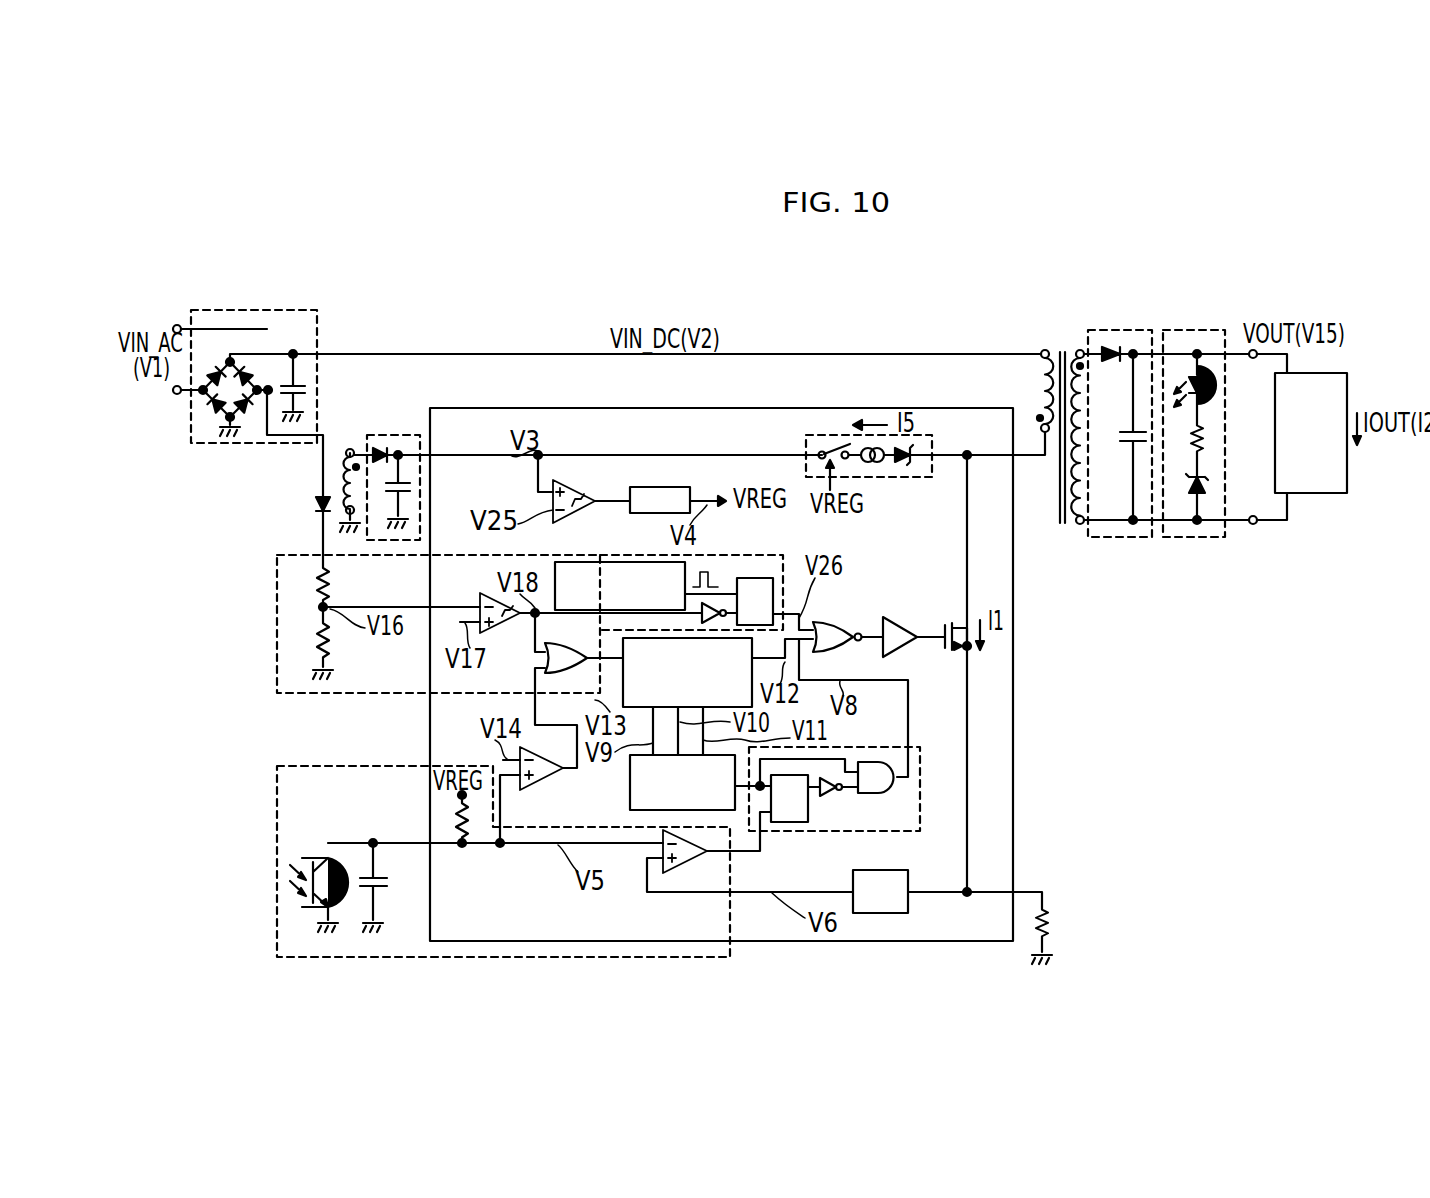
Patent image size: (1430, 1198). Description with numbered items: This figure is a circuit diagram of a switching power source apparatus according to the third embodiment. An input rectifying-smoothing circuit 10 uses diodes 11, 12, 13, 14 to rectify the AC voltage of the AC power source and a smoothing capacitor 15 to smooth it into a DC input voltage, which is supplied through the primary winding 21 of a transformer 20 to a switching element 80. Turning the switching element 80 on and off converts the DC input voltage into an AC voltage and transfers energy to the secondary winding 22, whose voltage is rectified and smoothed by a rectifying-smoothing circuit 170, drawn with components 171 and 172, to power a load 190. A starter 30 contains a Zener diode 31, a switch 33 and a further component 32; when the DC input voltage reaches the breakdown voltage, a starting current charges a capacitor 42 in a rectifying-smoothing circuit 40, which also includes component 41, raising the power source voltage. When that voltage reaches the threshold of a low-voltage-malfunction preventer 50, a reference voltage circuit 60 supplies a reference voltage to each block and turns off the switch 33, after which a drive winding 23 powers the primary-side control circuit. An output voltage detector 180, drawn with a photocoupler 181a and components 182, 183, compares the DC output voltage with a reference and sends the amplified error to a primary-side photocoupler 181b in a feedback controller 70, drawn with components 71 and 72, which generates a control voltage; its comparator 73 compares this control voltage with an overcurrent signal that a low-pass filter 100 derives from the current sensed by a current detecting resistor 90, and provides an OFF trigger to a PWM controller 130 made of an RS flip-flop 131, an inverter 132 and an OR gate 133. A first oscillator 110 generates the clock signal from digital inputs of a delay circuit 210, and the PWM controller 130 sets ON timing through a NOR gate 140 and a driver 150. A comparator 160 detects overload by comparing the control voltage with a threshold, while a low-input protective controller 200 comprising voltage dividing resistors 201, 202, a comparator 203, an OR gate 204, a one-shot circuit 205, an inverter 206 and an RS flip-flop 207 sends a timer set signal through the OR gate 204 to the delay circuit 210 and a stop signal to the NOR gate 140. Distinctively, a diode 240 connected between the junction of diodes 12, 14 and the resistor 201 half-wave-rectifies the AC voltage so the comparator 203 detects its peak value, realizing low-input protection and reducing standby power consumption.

The input rectifying-smoothing circuit 10 is at (317, 325).
The diode 11 is at (213, 370).
The diode 12 is at (247, 370).
The diode 13 is at (214, 410).
The diode 14 is at (245, 410).
The smoothing capacitor 15 is at (305, 390).
The transformer 20 is at (1060, 350).
The primary winding 21 is at (1040, 350).
The secondary winding 22 is at (1078, 350).
The drive winding 23 is at (348, 449).
The starter 30 is at (932, 438).
The Zener diode 31 is at (906, 463).
The current source 32 is at (875, 463).
The switch 33 is at (820, 459).
The rectifying-smoothing circuit 40 is at (400, 435).
The diode 41 is at (380, 447).
The capacitor 42 is at (412, 488).
The low-voltage-malfunction preventer 50 is at (583, 485).
The reference voltage circuit 60 is at (665, 487).
The feedback controller 70 is at (310, 766).
The capacitor 71 is at (387, 885).
The resistor 72 is at (470, 826).
The comparator 73 is at (690, 874).
The switching element 80 is at (950, 624).
The current detecting resistor 90 is at (1050, 920).
The low-pass filter 100 is at (900, 913).
The first oscillator 110 is at (545, 785).
The PWM controller 130 is at (920, 745).
The RS flip-flop 131 is at (785, 823).
The inverter 132 is at (835, 797).
The OR gate 133 is at (870, 795).
The NOR gate 140 is at (835, 620).
The driver 150 is at (900, 615).
The comparator 160 is at (630, 805).
The rectifying-smoothing circuit 170 is at (1125, 537).
The diode 171 is at (1112, 346).
The output capacitor 172 is at (1125, 443).
The output voltage detector 180 is at (1188, 537).
The photocoupler 181a is at (1205, 368).
The primary-side photocoupler 181b is at (310, 857).
The resistor 182 is at (1205, 440).
The zener diode 183 is at (1205, 487).
The load 190 is at (1347, 463).
The low-input protective controller 200 is at (277, 613).
The voltage dividing resistor 201 is at (335, 580).
The voltage dividing resistor 202 is at (335, 646).
The comparator 203 is at (496, 600).
The OR gate 204 is at (550, 671).
The one-shot circuit 205 is at (638, 557).
The inverter 206 is at (712, 603).
The RS flip-flop 207 is at (760, 578).
The delay circuit 210 is at (600, 632).
The diode 240 is at (315, 506).